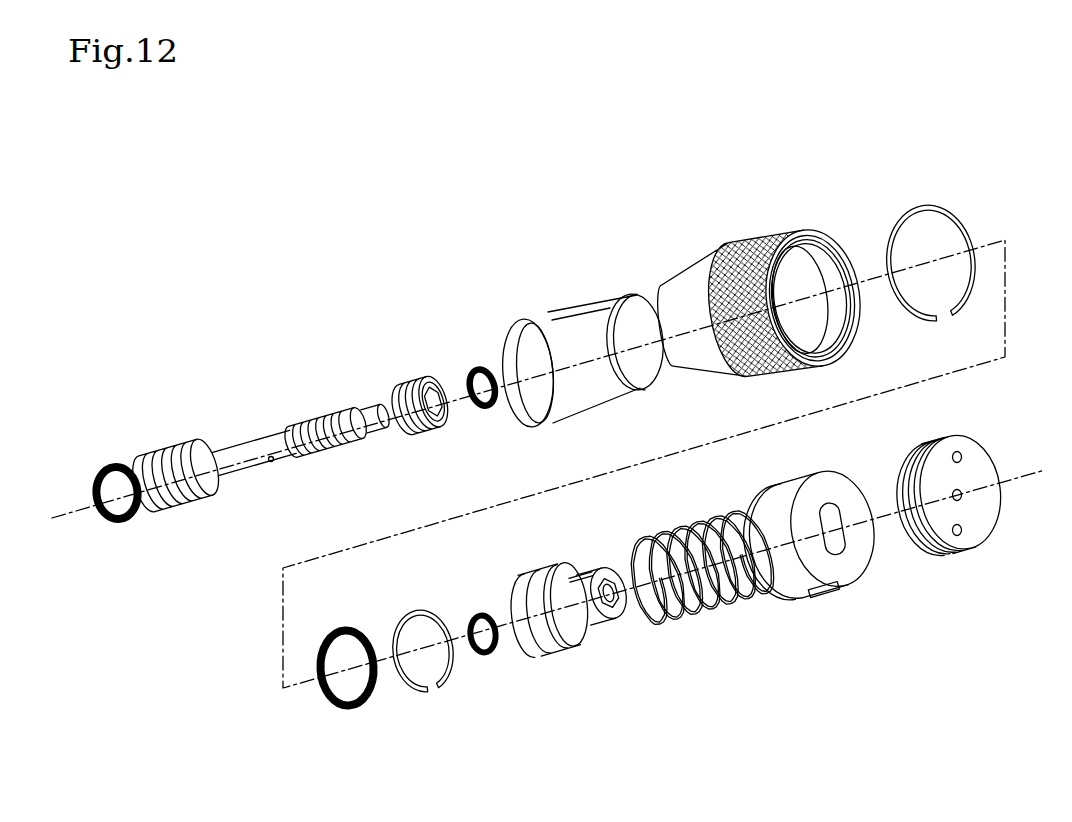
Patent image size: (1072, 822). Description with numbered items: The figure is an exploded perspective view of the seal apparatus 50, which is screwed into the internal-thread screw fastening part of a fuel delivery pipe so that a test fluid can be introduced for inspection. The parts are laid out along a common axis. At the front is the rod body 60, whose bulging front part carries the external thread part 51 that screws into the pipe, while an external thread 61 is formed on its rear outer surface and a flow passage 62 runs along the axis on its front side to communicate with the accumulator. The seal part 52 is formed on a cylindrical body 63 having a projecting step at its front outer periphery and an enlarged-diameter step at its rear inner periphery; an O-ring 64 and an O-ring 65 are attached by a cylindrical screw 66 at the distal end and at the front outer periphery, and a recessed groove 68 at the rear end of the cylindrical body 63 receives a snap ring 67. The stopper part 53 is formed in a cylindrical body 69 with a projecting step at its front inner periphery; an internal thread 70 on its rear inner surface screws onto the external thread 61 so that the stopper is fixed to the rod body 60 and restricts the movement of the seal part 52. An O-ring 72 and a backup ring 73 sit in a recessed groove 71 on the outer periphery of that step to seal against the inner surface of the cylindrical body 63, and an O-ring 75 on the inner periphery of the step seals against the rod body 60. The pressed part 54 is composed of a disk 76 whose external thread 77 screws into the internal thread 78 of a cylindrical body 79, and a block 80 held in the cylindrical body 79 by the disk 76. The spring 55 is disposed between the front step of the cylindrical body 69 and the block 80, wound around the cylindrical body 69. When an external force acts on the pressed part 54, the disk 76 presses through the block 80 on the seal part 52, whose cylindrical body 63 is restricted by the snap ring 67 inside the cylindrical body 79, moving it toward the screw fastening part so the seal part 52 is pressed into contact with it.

The seal apparatus 50 is at (548, 405).
The external thread part 51 is at (175, 436).
The seal part 52 is at (595, 333).
The stopper part 53 is at (576, 619).
The pressed part 54 is at (822, 579).
The spring 55 is at (700, 613).
The rod body 60 is at (259, 425).
The external thread 61 is at (326, 454).
The flow passage 62 is at (277, 489).
The cylindrical body 63 is at (527, 334).
The O-ring 64 is at (111, 458).
The O-ring 65 is at (482, 415).
The cylindrical screw 66 is at (420, 374).
The snap ring 67 is at (930, 230).
The recessed groove 68 is at (647, 365).
The cylindrical body 69 is at (585, 541).
The internal thread 70 is at (621, 621).
The recessed groove 71 is at (541, 644).
The O-ring 72 is at (347, 703).
The backup ring 73 is at (423, 681).
The O-ring 75 is at (484, 601).
The disk 76 is at (948, 521).
The external thread 77 is at (925, 527).
The internal thread 78 is at (812, 265).
The cylindrical body 79 is at (736, 277).
The block 80 is at (814, 629).